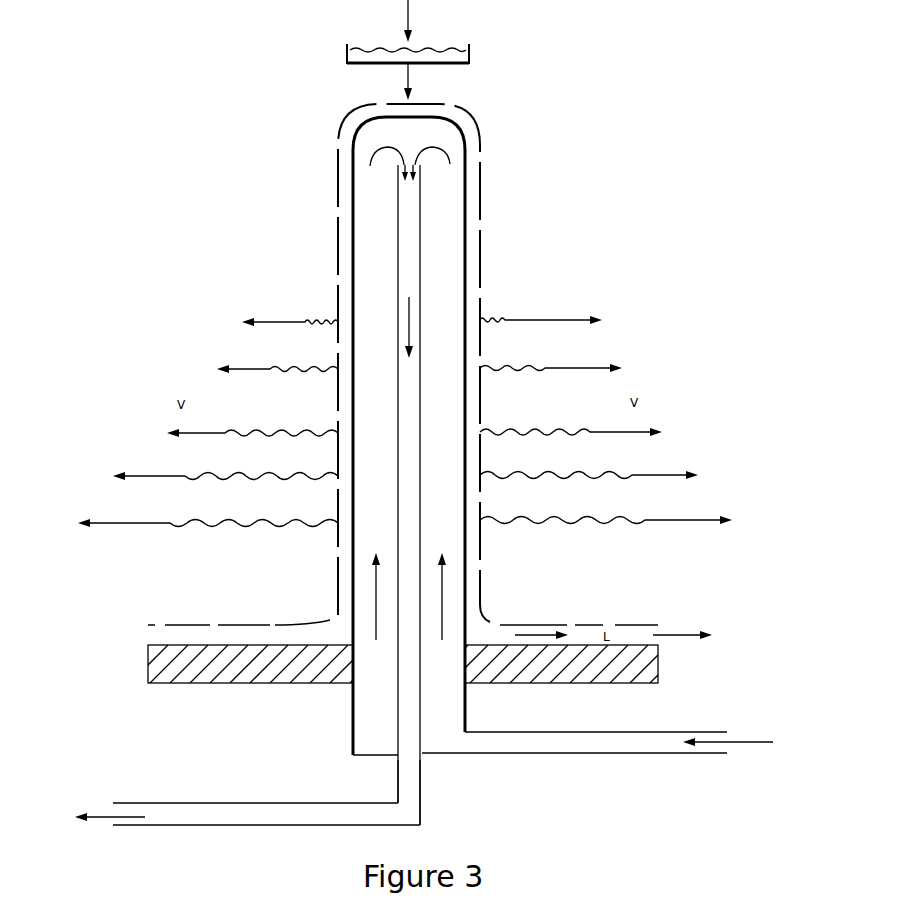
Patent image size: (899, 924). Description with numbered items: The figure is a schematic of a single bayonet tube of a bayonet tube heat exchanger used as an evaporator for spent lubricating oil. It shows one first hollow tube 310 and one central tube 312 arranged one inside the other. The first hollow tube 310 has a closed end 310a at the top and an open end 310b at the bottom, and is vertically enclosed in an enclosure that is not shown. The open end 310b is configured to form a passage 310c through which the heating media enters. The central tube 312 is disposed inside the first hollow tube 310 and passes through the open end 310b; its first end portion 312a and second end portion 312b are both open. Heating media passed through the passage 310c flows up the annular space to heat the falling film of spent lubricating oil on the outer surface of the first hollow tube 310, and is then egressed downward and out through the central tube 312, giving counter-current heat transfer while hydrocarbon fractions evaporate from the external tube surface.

The first hollow tube 310 is at (463, 262).
The closed end 310a is at (340, 125).
The open end 310b is at (355, 740).
The passage 310c is at (647, 745).
The central tube 312 is at (397, 288).
The first end portion 312a is at (380, 172).
The second end portion 312b is at (437, 735).